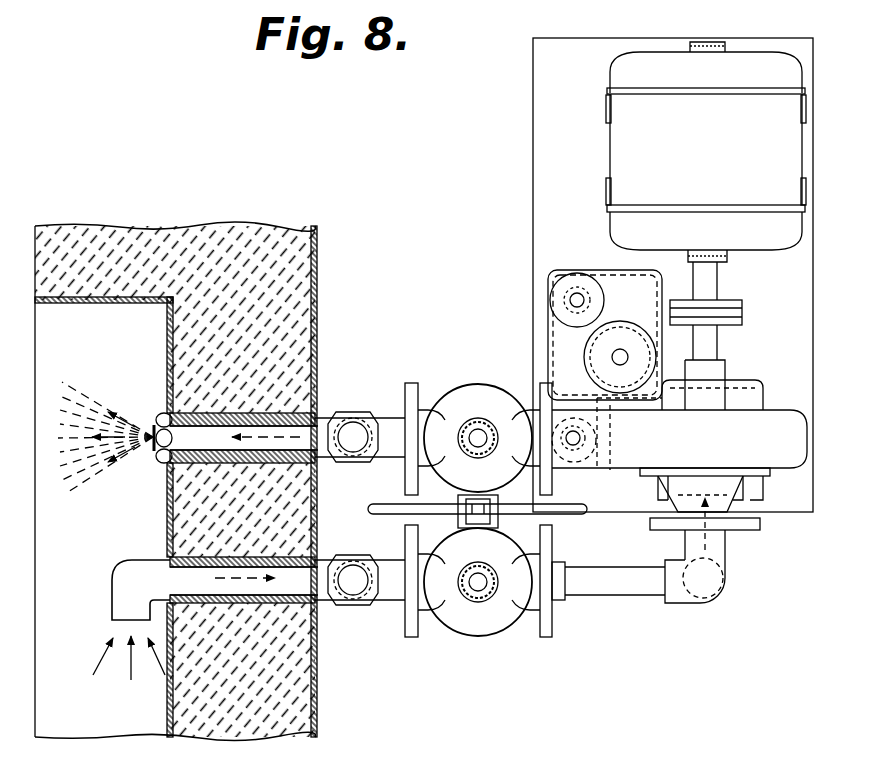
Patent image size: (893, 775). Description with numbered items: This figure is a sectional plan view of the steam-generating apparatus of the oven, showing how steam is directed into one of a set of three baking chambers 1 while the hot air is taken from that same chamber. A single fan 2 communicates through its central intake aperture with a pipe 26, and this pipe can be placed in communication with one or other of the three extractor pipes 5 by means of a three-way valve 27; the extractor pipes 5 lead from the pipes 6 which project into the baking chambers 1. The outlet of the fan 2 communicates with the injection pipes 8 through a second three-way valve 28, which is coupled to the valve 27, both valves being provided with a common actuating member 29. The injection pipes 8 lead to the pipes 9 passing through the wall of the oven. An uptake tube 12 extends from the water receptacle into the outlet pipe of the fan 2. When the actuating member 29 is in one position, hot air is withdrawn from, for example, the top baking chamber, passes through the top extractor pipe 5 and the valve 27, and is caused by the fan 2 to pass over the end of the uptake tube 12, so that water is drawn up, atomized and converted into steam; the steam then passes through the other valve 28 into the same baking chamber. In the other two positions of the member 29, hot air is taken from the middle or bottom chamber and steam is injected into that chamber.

The baking chamber 1 is at (110, 333).
The fan 2 is at (782, 425).
The extractor pipe 5 is at (383, 590).
The pipe projecting into baking chamber 6 is at (280, 568).
The injection pipe 8 is at (382, 423).
The pipe passing through oven wall 9 is at (215, 438).
The uptake tube 12 is at (585, 438).
The pipe 26 is at (720, 557).
The three-way valve 27 is at (478, 622).
The second three-way valve 28 is at (476, 395).
The common actuating member 29 is at (580, 512).